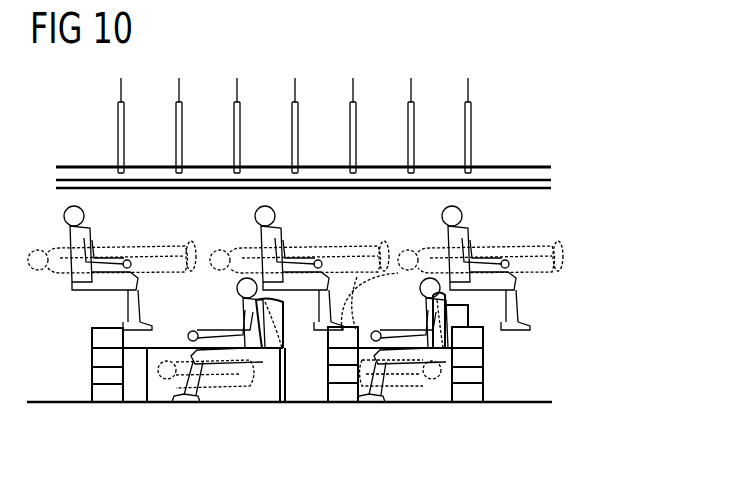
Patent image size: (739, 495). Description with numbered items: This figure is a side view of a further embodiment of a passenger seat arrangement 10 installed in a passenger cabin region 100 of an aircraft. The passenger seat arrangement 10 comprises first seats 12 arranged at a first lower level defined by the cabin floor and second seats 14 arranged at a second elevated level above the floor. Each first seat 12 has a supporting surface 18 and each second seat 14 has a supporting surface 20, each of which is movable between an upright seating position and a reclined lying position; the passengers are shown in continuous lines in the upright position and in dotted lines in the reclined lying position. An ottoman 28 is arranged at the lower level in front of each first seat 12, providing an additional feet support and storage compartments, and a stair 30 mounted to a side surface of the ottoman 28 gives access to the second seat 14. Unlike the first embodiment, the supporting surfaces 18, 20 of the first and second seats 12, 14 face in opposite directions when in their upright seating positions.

The passenger cabin region 100 is at (537, 116).
The passenger seat arrangement 10 is at (547, 222).
The first seat 12 is at (427, 394).
The second seat 14 is at (238, 229).
The supporting surface 18 is at (393, 383).
The supporting surface 20 is at (262, 365).
The ottoman 28 is at (335, 403).
The stair 30 is at (340, 374).